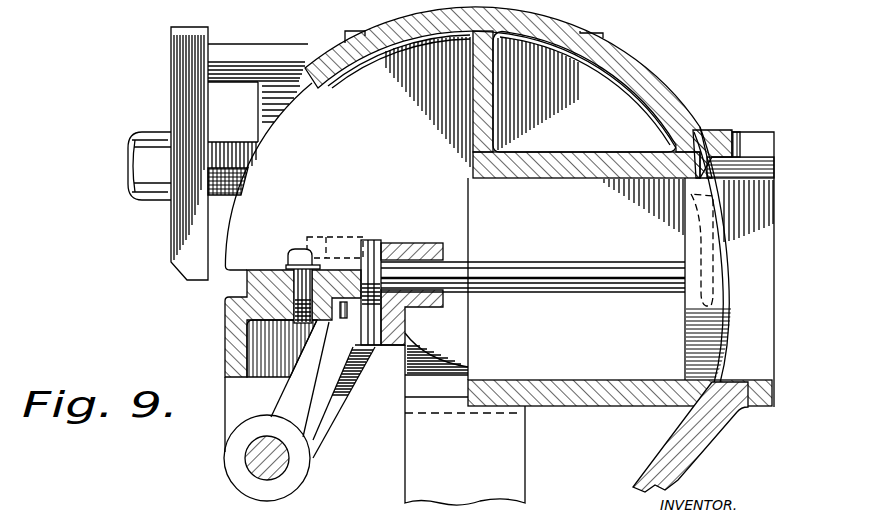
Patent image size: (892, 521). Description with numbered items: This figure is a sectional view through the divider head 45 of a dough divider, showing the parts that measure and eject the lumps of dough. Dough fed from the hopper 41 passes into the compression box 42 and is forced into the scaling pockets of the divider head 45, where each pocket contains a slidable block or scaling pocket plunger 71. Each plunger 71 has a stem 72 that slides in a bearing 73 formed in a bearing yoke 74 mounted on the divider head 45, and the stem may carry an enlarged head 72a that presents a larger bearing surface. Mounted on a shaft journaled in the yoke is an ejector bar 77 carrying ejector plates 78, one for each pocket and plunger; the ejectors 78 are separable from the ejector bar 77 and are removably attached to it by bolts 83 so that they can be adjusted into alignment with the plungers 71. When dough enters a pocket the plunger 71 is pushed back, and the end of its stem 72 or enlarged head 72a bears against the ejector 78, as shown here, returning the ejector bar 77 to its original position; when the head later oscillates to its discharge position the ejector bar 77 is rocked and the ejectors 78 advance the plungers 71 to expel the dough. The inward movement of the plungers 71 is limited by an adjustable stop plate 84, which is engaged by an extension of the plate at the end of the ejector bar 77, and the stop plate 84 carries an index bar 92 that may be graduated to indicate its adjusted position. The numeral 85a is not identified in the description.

The index bar 92 is at (251, 50).
The adjustable stop plate 84 is at (180, 97).
The bearing block 85a is at (228, 142).
The divider head 45 is at (690, 143).
The hopper 41 is at (772, 130).
The scaling pocket plunger 71 is at (727, 243).
The compression box 42 is at (698, 309).
The plunger stem 72 is at (597, 272).
The enlarged head 72a is at (380, 242).
The bearing 73 is at (447, 238).
The ejector plate 78 is at (350, 265).
The bolt 83 is at (297, 280).
The ejector bar 77 is at (226, 333).
The bearing yoke 74 is at (390, 348).